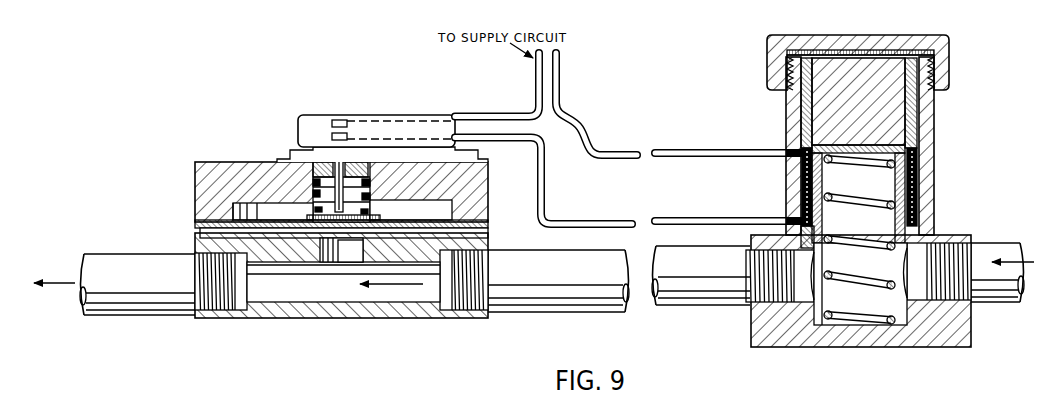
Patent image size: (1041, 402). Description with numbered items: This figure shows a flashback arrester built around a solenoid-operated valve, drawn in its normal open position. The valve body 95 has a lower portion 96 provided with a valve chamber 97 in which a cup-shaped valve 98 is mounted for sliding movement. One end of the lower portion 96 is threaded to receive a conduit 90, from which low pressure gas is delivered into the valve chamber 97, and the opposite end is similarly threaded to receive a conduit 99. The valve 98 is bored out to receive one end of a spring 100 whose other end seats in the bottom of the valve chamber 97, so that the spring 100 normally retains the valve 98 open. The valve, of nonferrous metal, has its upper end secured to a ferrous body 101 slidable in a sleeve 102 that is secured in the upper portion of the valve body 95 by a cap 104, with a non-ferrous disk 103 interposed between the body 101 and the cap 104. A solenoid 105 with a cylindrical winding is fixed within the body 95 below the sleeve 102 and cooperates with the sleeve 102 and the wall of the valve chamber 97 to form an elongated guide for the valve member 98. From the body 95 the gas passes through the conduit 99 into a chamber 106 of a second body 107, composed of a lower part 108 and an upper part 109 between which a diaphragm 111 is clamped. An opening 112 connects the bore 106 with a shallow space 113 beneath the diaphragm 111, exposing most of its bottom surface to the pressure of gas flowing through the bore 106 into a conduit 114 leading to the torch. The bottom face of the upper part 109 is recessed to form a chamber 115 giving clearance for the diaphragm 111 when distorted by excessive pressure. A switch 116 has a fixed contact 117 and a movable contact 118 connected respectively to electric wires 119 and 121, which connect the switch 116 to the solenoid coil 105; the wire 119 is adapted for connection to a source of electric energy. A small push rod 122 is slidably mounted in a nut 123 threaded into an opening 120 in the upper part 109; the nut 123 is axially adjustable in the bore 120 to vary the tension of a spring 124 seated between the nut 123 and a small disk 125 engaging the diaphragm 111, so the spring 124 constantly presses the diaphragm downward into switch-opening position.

The conduit 90 is at (999, 247).
The valve body 95 is at (865, 200).
The lower portion 96 is at (966, 323).
The valve chamber 97 is at (894, 310).
The cup-shaped valve 98 is at (899, 218).
The conduit 99 is at (700, 291).
The spring 100 is at (861, 280).
The body 101 is at (889, 107).
The sleeve 102 is at (804, 105).
The disk 103 is at (876, 52).
The cap 104 is at (776, 52).
The solenoid 105 is at (918, 160).
The chamber 106 is at (315, 294).
The second body 107 is at (296, 296).
The lower part 108 is at (203, 318).
The upper part 109 is at (331, 214).
The diaphragm 111 is at (197, 226).
The opening 112 is at (348, 258).
The shallow space 113 is at (488, 235).
The conduit 114 is at (110, 296).
The chamber 115 is at (488, 198).
The switch 116 is at (354, 108).
The fixed contact 117 is at (332, 123).
The movable contact 118 is at (330, 137).
The electric wire 119 is at (490, 112).
The opening 120 is at (312, 181).
The electric wire 121 is at (507, 142).
The push rod 122 is at (287, 159).
The nut 123 is at (367, 181).
The spring 124 is at (308, 223).
The disk 125 is at (378, 220).